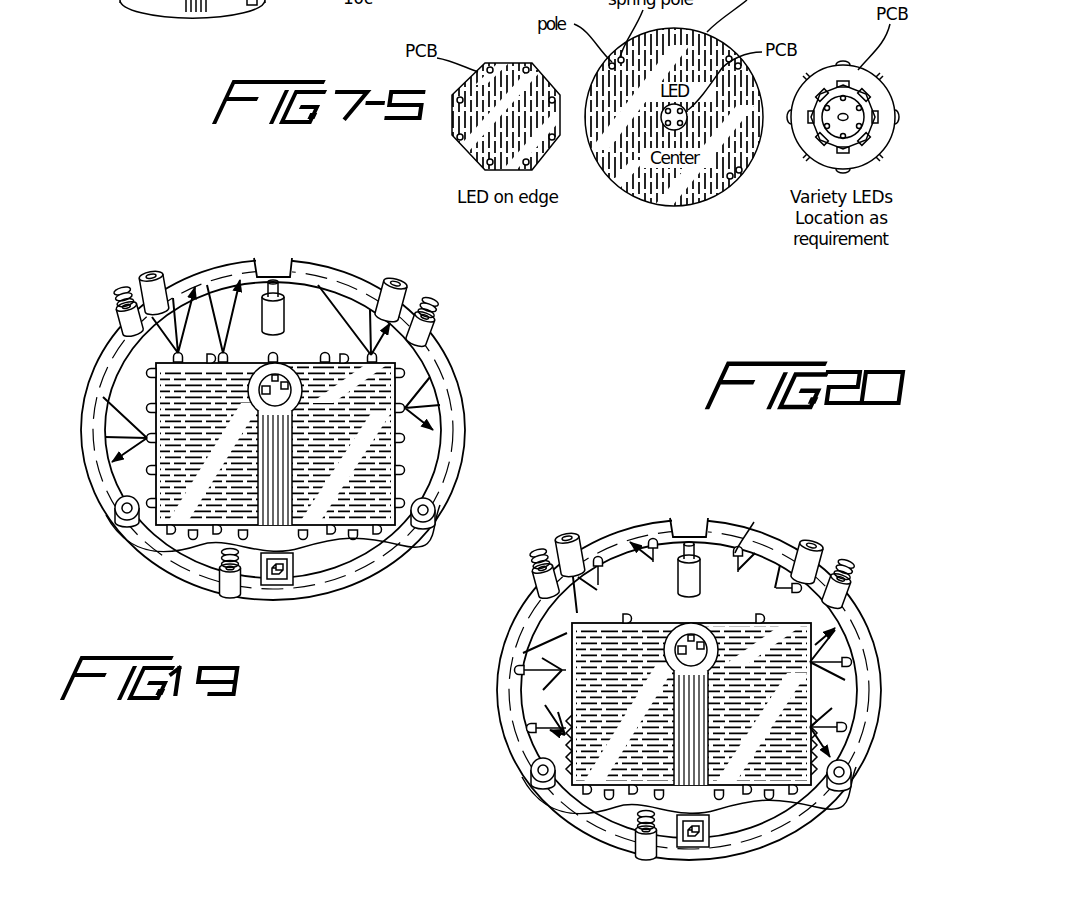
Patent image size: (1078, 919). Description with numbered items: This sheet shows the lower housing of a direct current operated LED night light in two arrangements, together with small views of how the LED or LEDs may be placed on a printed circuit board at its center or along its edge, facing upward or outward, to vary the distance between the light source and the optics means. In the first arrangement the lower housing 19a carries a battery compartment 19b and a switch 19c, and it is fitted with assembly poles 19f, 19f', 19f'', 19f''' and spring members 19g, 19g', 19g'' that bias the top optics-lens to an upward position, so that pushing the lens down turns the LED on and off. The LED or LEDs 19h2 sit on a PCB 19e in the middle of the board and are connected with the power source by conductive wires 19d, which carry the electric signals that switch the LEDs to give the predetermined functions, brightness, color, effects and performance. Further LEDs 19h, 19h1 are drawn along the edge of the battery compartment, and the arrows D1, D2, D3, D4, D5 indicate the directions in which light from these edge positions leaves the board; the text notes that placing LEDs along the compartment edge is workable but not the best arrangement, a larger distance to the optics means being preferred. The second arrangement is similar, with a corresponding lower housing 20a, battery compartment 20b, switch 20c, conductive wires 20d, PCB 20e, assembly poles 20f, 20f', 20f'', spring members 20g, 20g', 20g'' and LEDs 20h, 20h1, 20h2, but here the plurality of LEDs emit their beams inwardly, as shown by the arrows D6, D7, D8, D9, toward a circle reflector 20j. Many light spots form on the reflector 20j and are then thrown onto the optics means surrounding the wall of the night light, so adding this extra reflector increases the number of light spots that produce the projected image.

In FIG. 19, the lower housing 19a is at (197, 268).
In FIG. 19, the battery compartment 19b is at (297, 362).
In FIG. 19, the switch 19c is at (285, 585).
In FIG. 19, the conductive wires 19d is at (283, 448).
In FIG. 19, the PCB 19e is at (294, 392).
In FIG. 19, the assembly pole 19f is at (129, 261).
In FIG. 19, the assembly pole 19f' is at (446, 274).
In FIG. 19, the assembly pole 19f'' is at (403, 568).
In FIG. 19, the assembly pole 19f''' is at (94, 547).
In FIG. 19, the spring member 19g is at (96, 287).
In FIG. 19, the spring member 19g' is at (478, 317).
In FIG. 19, the spring member 19g'' is at (176, 585).
In FIG. 19, the side LED 19h is at (148, 372).
In FIG. 19, the side LED 19h1 is at (406, 373).
In FIG. 19, the LED or LEDs 19h2 is at (268, 392).
In FIG. 19, the light direction D1 is at (183, 307).
In FIG. 19, the light direction D2 is at (227, 305).
In FIG. 19, the light direction D3 is at (352, 318).
In FIG. 19, the light direction D4 is at (445, 418).
In FIG. 19, the light direction D5 is at (115, 443).
In FIG. 20, the ring frame 20a is at (689, 659).
In FIG. 20, the circuit board 20b is at (689, 635).
In FIG. 20, the switch box 20c is at (725, 856).
In FIG. 20, the conductive traces 20d is at (648, 728).
In FIG. 20, the center LED socket 20e is at (653, 661).
In FIG. 20, the post 20f is at (595, 487).
In FIG. 20, the post 20f' is at (826, 519).
In FIG. 20, the post 20f'' is at (691, 813).
In FIG. 20, the spring pole 20g is at (558, 524).
In FIG. 20, the spring pole 20g' is at (863, 540).
In FIG. 20, the spring pole 20g'' is at (610, 856).
In FIG. 20, the side LED 20h is at (500, 758).
In FIG. 20, the side LED 20h1 is at (497, 700).
In FIG. 20, the top LED 20h2 is at (650, 498).
In FIG. 20, the circle reflector 20j is at (765, 489).
In FIG. 20, the light direction D6 is at (560, 577).
In FIG. 20, the light direction D7 is at (821, 599).
In FIG. 20, the light direction D8 is at (502, 678).
In FIG. 20, the light direction D9 is at (857, 696).